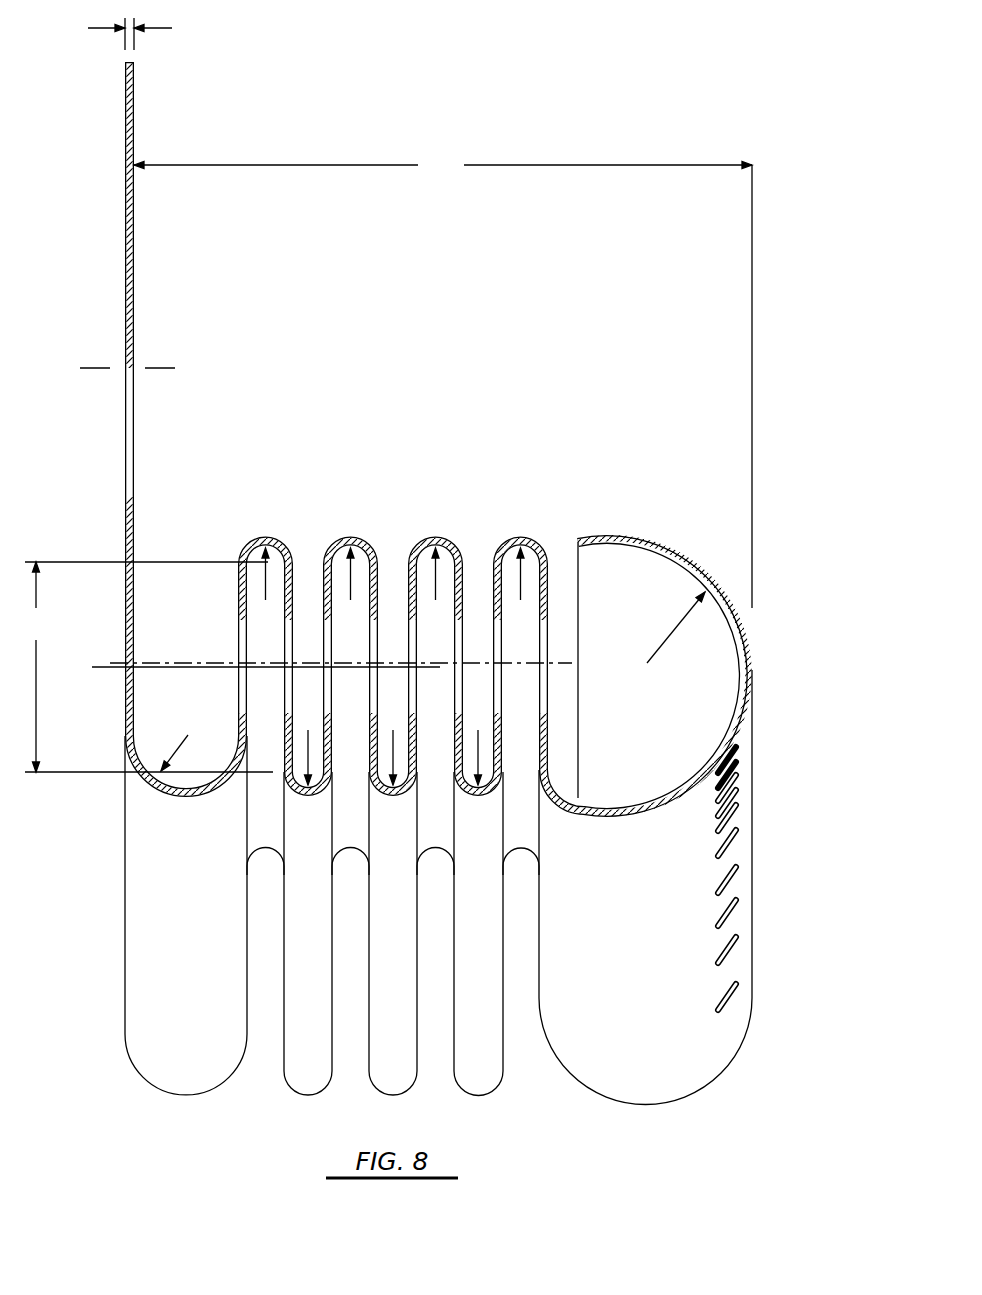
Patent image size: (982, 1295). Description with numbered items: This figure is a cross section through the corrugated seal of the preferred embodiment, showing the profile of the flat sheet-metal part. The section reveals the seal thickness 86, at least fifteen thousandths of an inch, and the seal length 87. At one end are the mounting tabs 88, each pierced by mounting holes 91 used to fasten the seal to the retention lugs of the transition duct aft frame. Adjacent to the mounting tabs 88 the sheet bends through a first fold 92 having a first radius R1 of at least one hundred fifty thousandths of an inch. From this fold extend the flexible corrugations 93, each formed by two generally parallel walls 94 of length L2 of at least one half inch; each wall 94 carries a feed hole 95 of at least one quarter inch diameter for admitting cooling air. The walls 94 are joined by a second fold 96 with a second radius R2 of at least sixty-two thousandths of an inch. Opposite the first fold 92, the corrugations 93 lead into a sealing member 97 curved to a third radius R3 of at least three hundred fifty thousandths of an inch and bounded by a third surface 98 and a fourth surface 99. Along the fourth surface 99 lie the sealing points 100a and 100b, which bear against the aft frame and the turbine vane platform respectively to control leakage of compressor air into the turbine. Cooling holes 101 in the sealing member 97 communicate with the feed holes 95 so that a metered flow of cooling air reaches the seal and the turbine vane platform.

The seal thickness 86 is at (150, 32).
The seal length 87 is at (443, 379).
The mounting tabs 88 is at (123, 200).
The mounting holes 91 is at (128, 472).
The first fold 92 is at (188, 803).
The flexible corrugations 93 is at (545, 467).
The generally parallel walls 94 is at (323, 585).
The feed hole 95 is at (477, 752).
The second fold 96 is at (518, 537).
The sealing member 97 is at (771, 623).
The third surface 98 is at (738, 707).
The fourth surface 99 is at (673, 545).
The sealing point 100a is at (605, 813).
The sealing point 100b is at (752, 673).
The cooling holes 101 is at (767, 780).
The length L2 is at (146, 667).
The first radius R1 is at (182, 737).
The second radius R2 is at (312, 664).
The third radius R3 is at (666, 644).